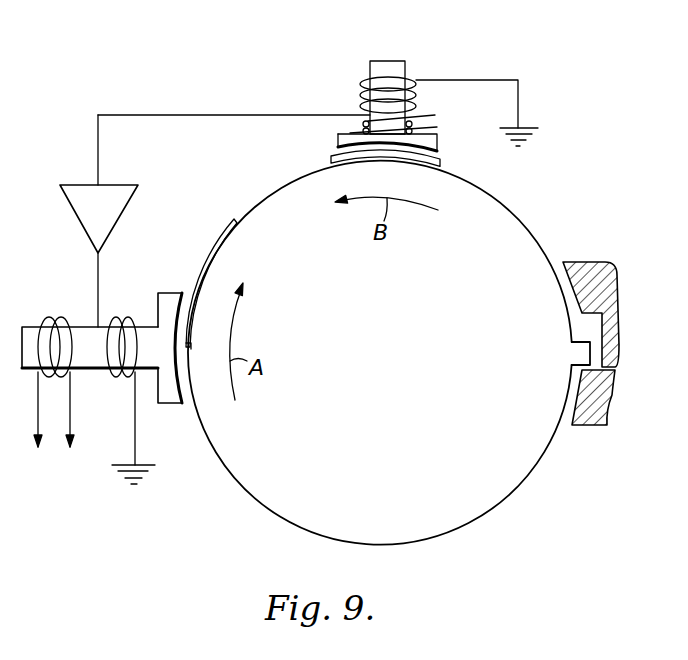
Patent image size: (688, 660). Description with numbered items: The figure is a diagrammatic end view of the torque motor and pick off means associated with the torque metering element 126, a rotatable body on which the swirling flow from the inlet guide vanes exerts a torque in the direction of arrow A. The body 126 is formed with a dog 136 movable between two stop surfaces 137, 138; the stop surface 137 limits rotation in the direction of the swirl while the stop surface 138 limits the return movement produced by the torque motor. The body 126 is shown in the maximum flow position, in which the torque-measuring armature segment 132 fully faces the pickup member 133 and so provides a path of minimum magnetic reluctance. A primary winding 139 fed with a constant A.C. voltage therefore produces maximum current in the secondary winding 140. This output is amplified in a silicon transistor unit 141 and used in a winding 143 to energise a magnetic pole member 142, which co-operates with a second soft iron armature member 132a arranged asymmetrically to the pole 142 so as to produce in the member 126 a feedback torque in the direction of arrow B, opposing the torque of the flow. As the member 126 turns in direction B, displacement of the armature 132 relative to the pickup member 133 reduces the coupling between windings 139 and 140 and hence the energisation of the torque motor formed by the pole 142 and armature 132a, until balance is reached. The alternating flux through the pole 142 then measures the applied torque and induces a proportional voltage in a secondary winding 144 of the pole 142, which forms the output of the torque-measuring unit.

The torque metering element 126 is at (380, 353).
The torque-measuring armature segment 132 is at (438, 159).
The second soft iron armature member 132a is at (222, 244).
The pickup member 133 is at (384, 66).
The dog 136 is at (580, 355).
The stop surface 137 is at (606, 374).
The stop surface 138 is at (616, 274).
The primary winding 139 is at (350, 133).
The secondary winding 140 is at (417, 88).
The silicon transistor unit 141 is at (83, 223).
The magnetic pole member 142 is at (172, 292).
The winding 143 is at (125, 317).
The secondary winding 144 is at (58, 317).